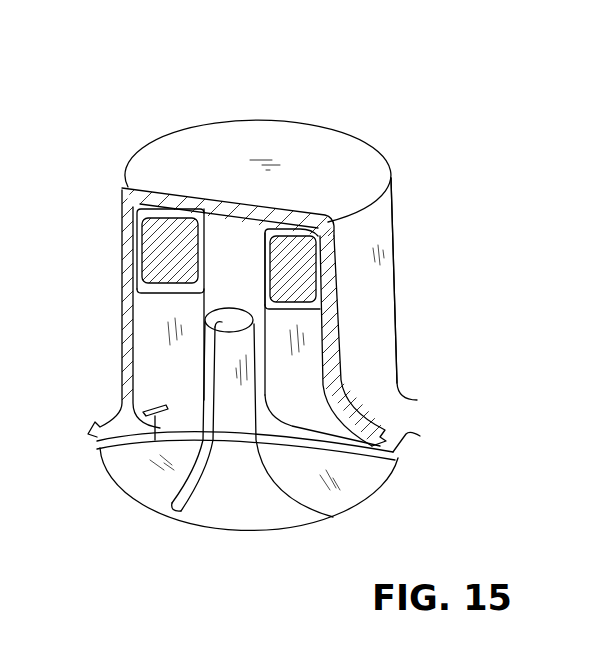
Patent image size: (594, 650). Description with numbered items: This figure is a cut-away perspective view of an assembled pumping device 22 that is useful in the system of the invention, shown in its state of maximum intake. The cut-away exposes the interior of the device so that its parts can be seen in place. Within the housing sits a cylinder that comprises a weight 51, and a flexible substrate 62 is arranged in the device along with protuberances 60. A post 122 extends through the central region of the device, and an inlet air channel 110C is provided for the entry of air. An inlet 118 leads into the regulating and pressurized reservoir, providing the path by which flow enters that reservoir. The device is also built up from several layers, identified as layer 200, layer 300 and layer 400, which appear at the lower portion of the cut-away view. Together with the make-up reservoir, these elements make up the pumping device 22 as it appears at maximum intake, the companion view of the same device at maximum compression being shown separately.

The pumping device 22 is at (300, 110).
The protuberances 60 is at (170, 217).
The weight 51 is at (167, 253).
The flexible substrate 62 is at (265, 395).
The layer 200 is at (403, 433).
The layer 300 is at (380, 453).
The layer 400 is at (387, 457).
The inlet 118 is at (155, 428).
The post 122 is at (333, 517).
The inlet air channel 110C is at (203, 473).